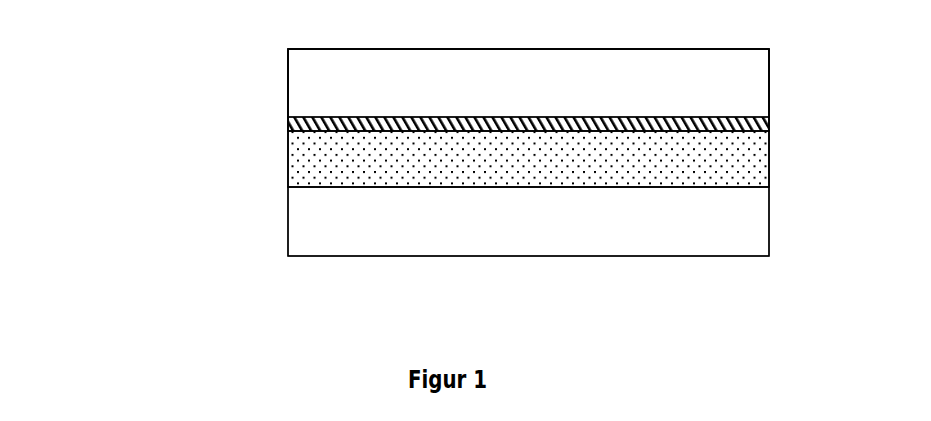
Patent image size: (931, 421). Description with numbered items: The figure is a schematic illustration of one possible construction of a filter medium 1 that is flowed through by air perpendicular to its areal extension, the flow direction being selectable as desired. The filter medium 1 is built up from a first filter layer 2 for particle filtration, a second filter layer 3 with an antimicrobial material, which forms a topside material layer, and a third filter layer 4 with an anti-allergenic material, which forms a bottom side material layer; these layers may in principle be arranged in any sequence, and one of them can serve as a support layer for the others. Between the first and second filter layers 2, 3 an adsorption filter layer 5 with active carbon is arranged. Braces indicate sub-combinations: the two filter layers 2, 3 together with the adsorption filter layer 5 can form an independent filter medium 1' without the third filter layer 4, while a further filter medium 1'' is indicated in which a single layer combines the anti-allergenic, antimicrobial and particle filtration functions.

The filter medium 1 is at (396, 153).
The filter medium 1' is at (438, 118).
The filter medium 1'' is at (475, 90).
The first filter layer 2 is at (769, 170).
The second filter layer 3 is at (769, 77).
The third filter layer 4 is at (769, 215).
The adsorption filter layer 5 is at (769, 121).